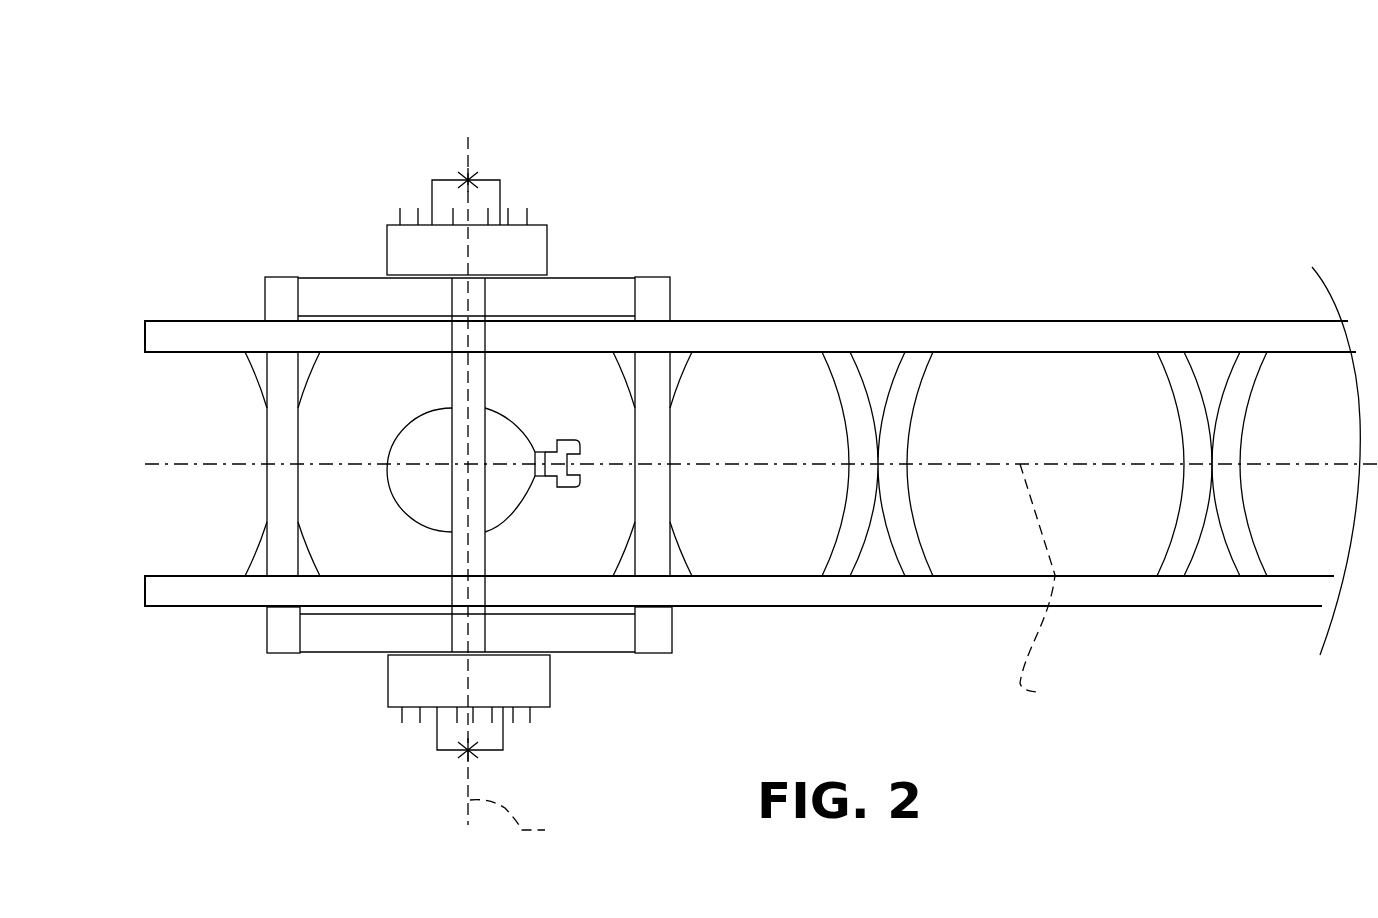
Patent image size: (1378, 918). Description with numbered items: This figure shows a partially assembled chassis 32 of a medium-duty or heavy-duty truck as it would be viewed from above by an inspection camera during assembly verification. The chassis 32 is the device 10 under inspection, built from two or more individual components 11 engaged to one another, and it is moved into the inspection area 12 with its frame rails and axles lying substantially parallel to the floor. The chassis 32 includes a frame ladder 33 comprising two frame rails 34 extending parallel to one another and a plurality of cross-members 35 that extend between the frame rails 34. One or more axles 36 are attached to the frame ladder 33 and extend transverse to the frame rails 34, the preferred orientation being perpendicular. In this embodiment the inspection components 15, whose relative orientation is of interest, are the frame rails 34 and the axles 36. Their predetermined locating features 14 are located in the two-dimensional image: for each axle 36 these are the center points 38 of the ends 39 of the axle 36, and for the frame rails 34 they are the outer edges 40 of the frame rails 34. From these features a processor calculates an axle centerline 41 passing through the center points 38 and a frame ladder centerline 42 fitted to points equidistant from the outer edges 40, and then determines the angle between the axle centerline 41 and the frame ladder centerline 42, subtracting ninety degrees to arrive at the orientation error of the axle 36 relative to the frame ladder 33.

The device 10 is at (1017, 330).
The individual components 11 is at (407, 472).
The inspection area 12 is at (852, 193).
The predetermined locating features 14 is at (468, 180).
The inspection components 15 is at (453, 410).
The chassis 32 is at (1146, 332).
The frame ladder 33 is at (1215, 600).
The frame rails 34 is at (742, 330).
The cross-members 35 is at (275, 513).
The axles 36 is at (483, 393).
The center points 38 is at (468, 180).
The ends 39 is at (475, 181).
The outer edges 40 is at (883, 320).
The axle centerline 41 is at (526, 821).
The frame ladder centerline 42 is at (1055, 588).